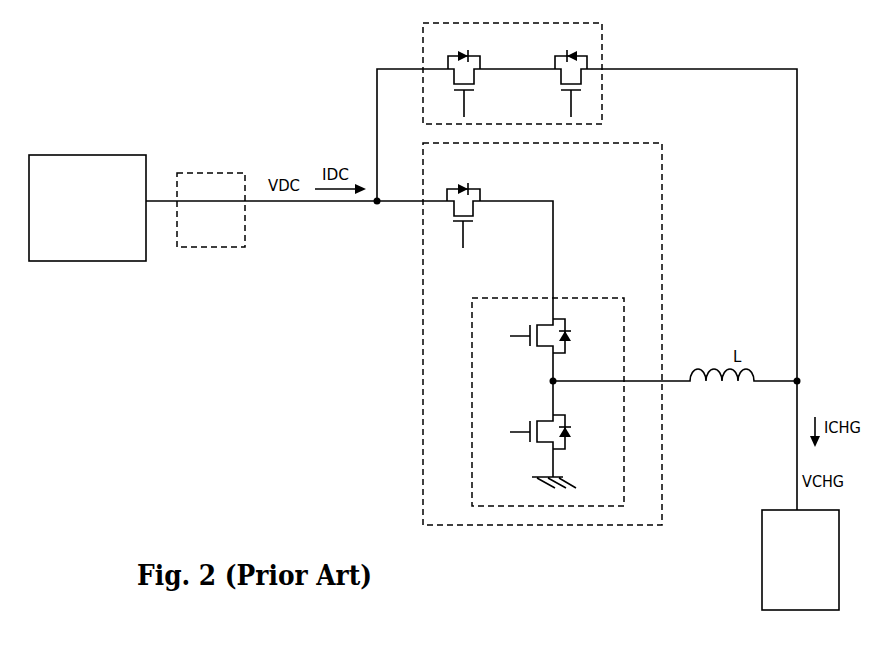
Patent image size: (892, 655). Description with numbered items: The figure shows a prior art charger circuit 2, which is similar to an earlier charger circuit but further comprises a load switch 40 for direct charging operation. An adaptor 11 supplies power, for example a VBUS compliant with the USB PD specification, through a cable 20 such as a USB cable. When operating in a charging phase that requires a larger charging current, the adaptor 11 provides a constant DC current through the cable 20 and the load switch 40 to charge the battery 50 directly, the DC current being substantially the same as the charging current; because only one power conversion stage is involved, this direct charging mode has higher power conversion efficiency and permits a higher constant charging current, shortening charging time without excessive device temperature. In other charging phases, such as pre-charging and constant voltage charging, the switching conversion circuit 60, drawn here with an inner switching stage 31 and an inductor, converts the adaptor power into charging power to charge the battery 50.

The charger circuit 2 is at (163, 82).
The adaptor 11 is at (93, 249).
The cable 20 is at (219, 238).
The load switch 40 is at (526, 113).
The switching conversion circuit 60 is at (455, 507).
The switching stage (half-bridge) 31 is at (613, 497).
The battery 50 is at (812, 596).